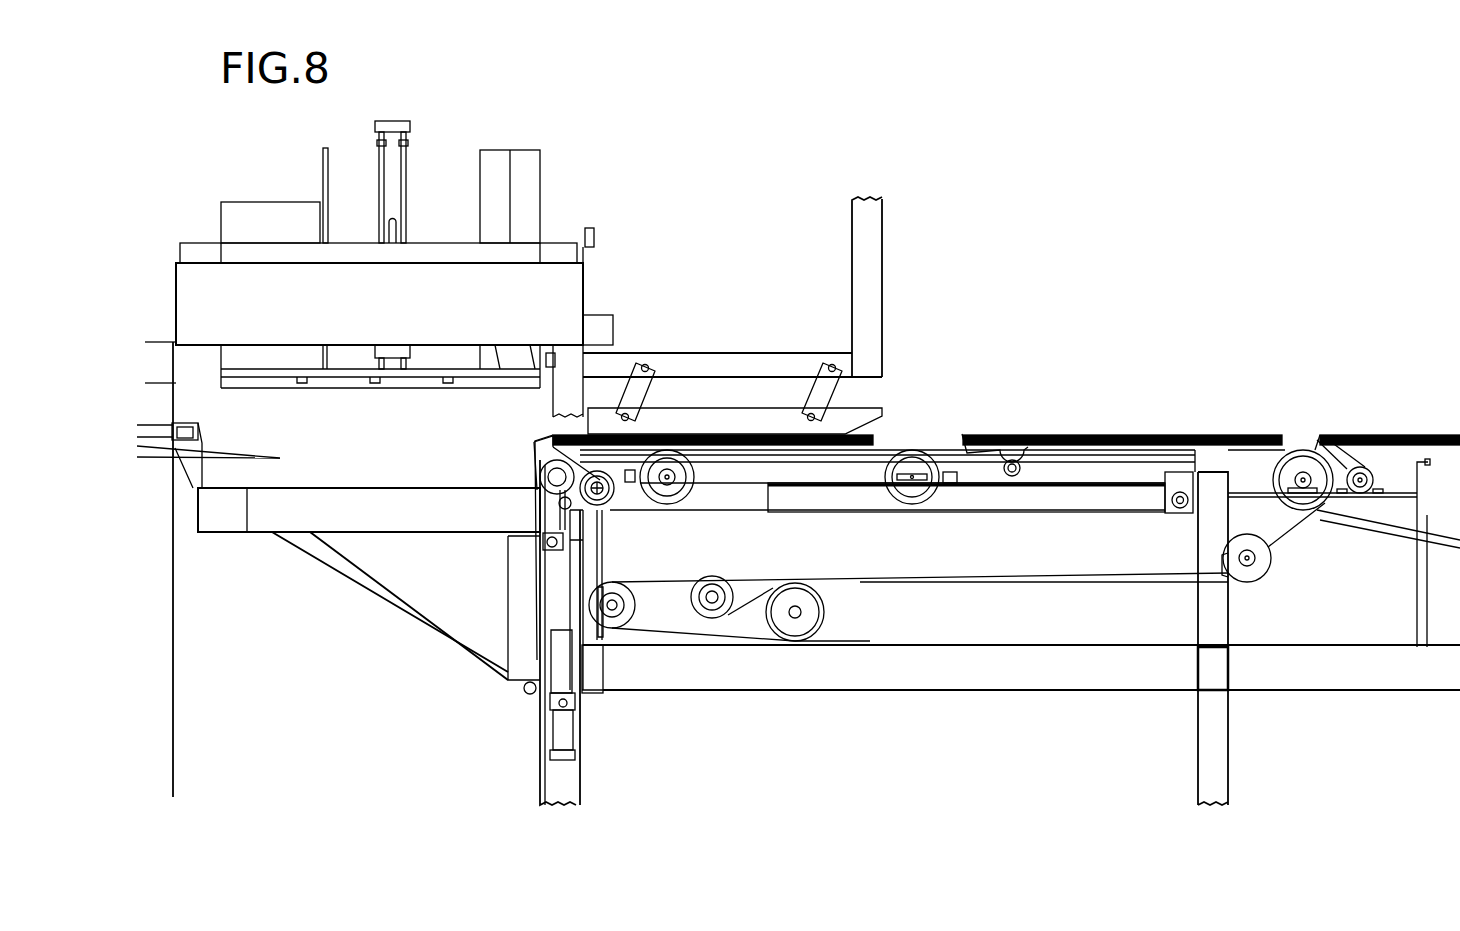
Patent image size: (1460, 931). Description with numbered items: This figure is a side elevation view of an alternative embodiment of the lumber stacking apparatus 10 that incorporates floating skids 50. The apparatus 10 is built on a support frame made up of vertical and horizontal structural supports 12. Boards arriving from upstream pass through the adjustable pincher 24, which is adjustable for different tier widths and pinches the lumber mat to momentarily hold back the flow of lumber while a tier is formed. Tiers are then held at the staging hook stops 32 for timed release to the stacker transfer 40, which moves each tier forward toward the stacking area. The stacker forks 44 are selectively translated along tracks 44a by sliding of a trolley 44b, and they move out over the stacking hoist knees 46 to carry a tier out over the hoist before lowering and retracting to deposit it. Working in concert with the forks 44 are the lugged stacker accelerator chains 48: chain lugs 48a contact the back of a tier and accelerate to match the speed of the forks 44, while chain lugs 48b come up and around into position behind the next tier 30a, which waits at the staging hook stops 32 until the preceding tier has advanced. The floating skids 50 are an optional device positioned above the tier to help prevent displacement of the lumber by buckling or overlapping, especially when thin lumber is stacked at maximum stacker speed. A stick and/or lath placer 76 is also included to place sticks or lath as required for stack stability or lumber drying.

The apparatus 10 is at (793, 193).
The structural supports 12 is at (870, 270).
The adjustable pincher 24 is at (1320, 437).
The tier 30a is at (1107, 437).
The staging hook stops 32 is at (963, 433).
The stacker transfer 40 is at (912, 440).
The stacker forks 44 is at (1177, 450).
The tracks 44a is at (1048, 508).
The trolley 44b is at (1158, 515).
The stacking hoist knees 46 is at (379, 510).
The stacker accelerator chains 48 is at (720, 512).
The chain lugs 48a is at (945, 484).
The chain lugs 48b is at (630, 484).
The floating skids 50 is at (712, 418).
The stick and/or lath placer 76 is at (503, 302).